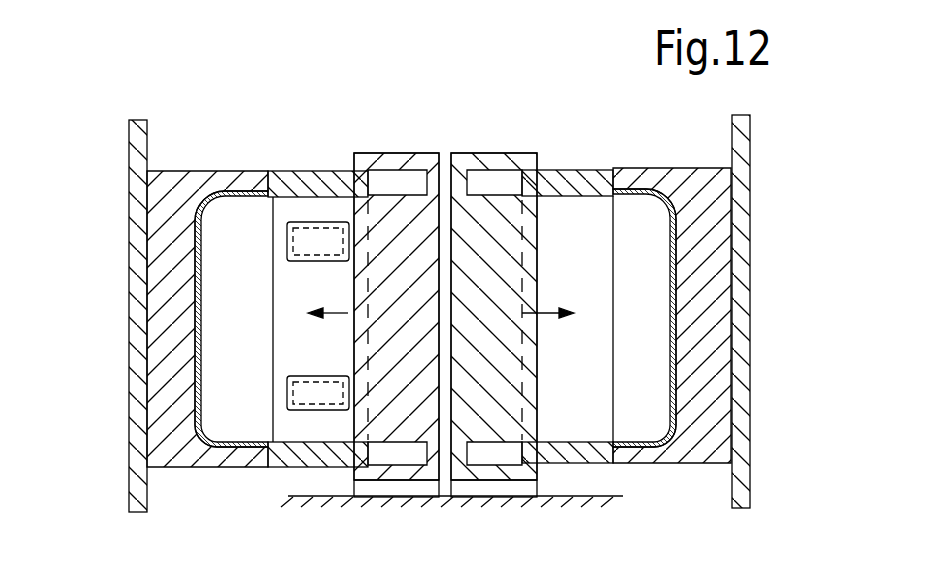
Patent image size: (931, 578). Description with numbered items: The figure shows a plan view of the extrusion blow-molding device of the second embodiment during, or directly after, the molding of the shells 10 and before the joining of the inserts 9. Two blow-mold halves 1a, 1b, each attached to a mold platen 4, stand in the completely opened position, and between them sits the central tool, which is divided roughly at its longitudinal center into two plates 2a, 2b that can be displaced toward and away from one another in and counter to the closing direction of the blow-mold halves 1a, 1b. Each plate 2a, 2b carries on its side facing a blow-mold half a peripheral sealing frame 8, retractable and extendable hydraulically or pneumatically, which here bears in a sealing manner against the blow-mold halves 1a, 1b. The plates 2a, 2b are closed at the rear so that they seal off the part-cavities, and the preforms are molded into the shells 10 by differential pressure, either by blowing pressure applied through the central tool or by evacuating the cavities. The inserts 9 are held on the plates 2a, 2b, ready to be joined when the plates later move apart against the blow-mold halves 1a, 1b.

The mold platen 4 is at (135, 178).
The blow-mold half 1a is at (203, 183).
The blow-mold half 1b is at (692, 182).
The plate of the central tool 2a is at (397, 222).
The plate of the central tool 2b is at (483, 228).
The sealing frame 8 is at (317, 170).
The insert 9 is at (320, 258).
The shell 10 is at (203, 308).